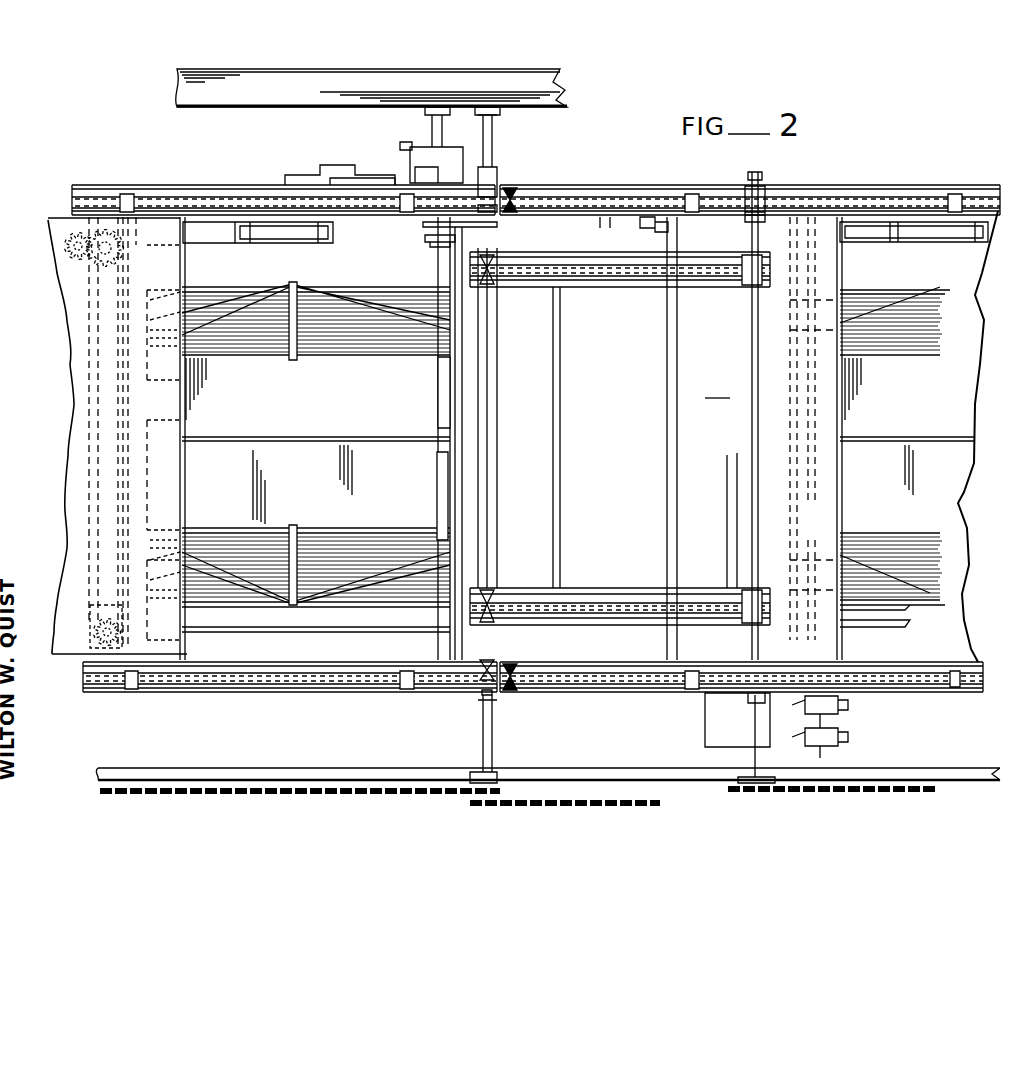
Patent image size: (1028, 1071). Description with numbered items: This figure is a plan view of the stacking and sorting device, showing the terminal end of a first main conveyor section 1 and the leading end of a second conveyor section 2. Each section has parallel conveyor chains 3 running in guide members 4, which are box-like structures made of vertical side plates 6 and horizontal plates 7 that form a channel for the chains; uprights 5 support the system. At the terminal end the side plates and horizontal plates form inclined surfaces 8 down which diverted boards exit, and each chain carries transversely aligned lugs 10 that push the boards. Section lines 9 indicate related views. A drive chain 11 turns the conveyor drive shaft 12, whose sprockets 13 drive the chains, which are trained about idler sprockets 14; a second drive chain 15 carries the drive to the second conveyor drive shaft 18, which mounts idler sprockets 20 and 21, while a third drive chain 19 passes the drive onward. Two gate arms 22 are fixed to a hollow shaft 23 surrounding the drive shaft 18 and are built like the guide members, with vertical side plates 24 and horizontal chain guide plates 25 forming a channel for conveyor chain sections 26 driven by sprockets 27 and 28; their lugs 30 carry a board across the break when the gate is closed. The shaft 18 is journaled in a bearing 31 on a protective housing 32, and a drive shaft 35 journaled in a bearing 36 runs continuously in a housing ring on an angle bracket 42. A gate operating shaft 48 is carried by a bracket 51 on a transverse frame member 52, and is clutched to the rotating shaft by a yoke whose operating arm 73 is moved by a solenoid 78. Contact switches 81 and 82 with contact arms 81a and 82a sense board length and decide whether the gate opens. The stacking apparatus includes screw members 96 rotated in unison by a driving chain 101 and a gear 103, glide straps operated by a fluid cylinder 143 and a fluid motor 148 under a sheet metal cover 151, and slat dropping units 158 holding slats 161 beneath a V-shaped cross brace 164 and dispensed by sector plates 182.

The first main conveyor section 1 is at (908, 150).
The second conveyor section 2 is at (112, 160).
The conveyor chains 3 is at (96, 200).
The chain guide members 4 is at (156, 175).
The uprights 5 is at (41, 394).
The vertical side plates 6 is at (252, 186).
The horizontal plates 7 is at (228, 196).
The inclined surfaces 8 is at (585, 186).
The section line 9 is at (163, 163).
The spaced lugs 10 is at (127, 194).
The drive chain 11 is at (900, 792).
The conveyor drive shaft 12 is at (756, 172).
The sprockets 13 is at (790, 212).
The idler sprockets 14 is at (514, 188).
The second drive chain 15 is at (642, 806).
The second conveyor drive shaft 18 is at (487, 135).
The third drive chain 19 is at (372, 786).
The idler sprocket 20 is at (486, 664).
The idler sprocket 21 is at (494, 186).
The gate arms 22 is at (611, 292).
The hollow shaft 23 is at (488, 534).
The vertical side plates 24 is at (636, 288).
The horizontal chain guide plates 25 is at (693, 288).
The conveyor chain sections 26 is at (740, 290).
The sprocket 27 is at (492, 590).
The sprocket 28 is at (503, 300).
The lugs 30 is at (684, 300).
The bearing 31 is at (494, 120).
The protective housing 32 is at (540, 72).
The drive shaft 35 is at (432, 134).
The bearing 36 is at (442, 122).
The angle bracket 42 is at (415, 156).
The gate operating shaft 48 is at (430, 230).
The bracket 51 is at (426, 240).
The transverse frame member 52 is at (446, 380).
The operating arm 73 is at (346, 180).
The solenoid 78 is at (310, 174).
The contact switch 81 is at (846, 712).
The contact arm 81a is at (842, 702).
The contact switch 82 is at (830, 744).
The contact arm 82a is at (824, 738).
The screw members 96 is at (85, 255).
The driving chain 101 is at (96, 328).
The gear 103 is at (67, 222).
The double-acting fluid cylinder 143 is at (672, 230).
The double acting fluid motor 148 is at (956, 238).
The sheet metal cover 151 is at (720, 388).
The slat dropping unit 158 is at (266, 366).
The slats 161 is at (232, 340).
The V-shaped cross brace 164 is at (384, 312).
The sector plates 182 is at (440, 290).